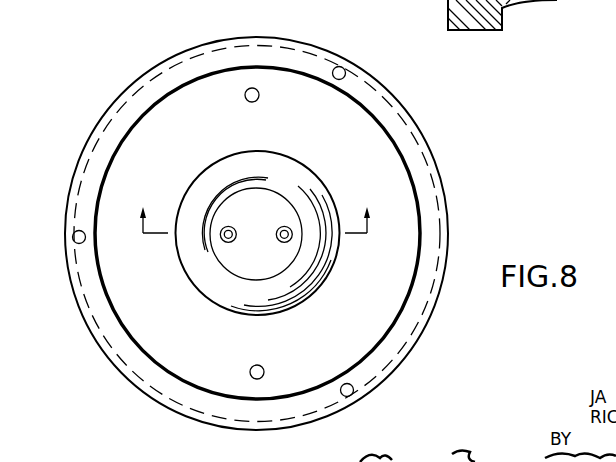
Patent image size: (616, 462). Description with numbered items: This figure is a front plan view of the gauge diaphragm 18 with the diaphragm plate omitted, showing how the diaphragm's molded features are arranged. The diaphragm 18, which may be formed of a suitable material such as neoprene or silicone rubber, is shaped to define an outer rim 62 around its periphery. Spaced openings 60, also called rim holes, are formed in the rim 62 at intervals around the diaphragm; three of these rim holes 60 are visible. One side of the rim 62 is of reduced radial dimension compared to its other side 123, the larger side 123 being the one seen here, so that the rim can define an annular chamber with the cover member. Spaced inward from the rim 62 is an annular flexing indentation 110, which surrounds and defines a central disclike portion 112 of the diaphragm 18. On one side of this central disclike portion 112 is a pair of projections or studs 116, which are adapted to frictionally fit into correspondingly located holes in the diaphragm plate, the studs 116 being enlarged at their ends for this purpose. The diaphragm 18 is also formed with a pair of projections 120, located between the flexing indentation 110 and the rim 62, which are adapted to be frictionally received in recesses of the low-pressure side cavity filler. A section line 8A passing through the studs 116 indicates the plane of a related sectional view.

The diaphragm 18 is at (438, 321).
The rim 62 is at (447, 221).
The other side of diaphragm rim 123 is at (433, 185).
The spaced openings 60 is at (346, 70).
The projections 120 is at (255, 88).
The annular flexing indentation 110 is at (303, 178).
The central disclike portion 112 is at (270, 268).
The projections or studs 116 is at (222, 230).
The section line 8A- 8A is at (256, 237).